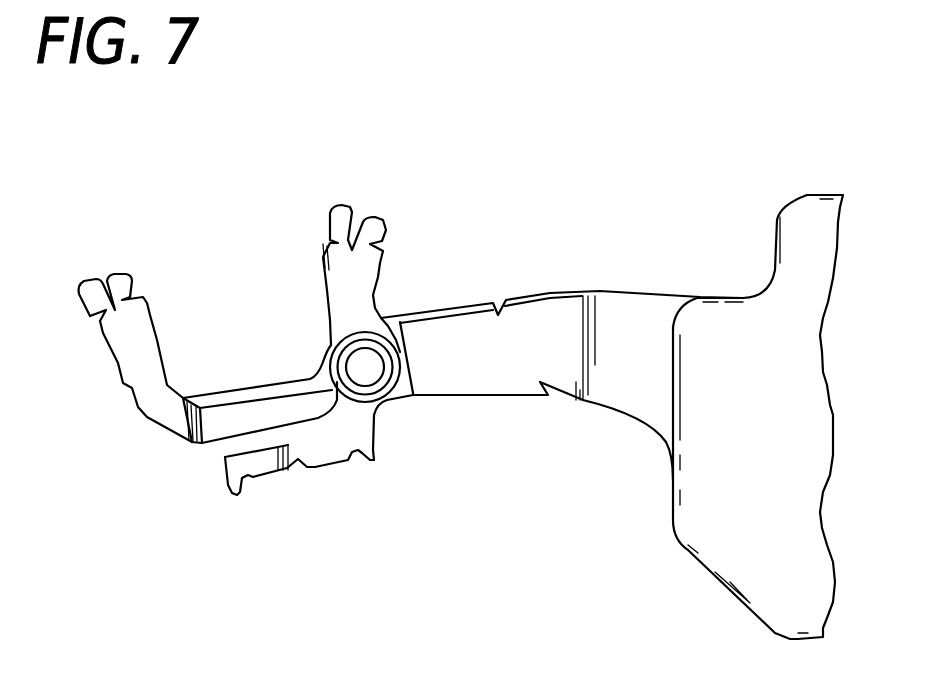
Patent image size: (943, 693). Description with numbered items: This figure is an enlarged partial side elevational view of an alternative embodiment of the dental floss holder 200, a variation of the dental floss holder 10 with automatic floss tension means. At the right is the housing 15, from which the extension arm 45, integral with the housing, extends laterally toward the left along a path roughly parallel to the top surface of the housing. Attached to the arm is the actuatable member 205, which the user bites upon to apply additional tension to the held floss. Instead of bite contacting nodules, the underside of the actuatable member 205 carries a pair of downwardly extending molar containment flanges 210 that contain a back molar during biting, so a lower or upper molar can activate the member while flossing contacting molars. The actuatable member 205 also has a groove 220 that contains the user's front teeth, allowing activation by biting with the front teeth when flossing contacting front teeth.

The dental floss holder 200 is at (235, 265).
The actuatable member 205 is at (325, 440).
The extension arm 45 is at (620, 312).
The molar containment flanges 210 is at (375, 461).
The groove 220 is at (303, 468).
The dental floss holder 10 is at (647, 213).
The housing 15 is at (712, 550).